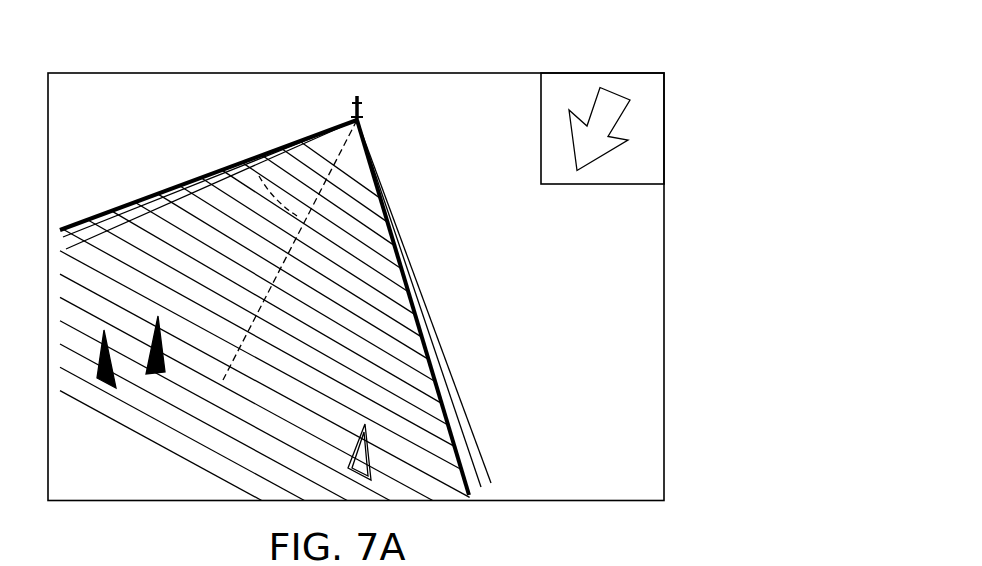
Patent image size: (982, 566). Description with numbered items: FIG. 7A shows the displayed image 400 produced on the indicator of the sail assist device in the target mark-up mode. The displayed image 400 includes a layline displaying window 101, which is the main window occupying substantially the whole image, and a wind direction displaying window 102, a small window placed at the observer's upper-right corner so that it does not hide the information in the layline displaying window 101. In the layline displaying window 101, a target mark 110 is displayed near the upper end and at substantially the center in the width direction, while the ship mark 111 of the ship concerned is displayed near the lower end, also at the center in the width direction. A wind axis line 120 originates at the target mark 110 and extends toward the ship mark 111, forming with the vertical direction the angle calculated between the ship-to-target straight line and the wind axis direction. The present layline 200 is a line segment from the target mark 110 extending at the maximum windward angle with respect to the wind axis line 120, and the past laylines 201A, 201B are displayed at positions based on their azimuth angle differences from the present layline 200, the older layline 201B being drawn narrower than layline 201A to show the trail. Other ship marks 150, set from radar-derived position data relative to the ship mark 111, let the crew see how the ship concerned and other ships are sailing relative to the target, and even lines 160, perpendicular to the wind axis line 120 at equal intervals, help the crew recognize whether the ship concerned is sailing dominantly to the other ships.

The layline displaying window 101 is at (60, 65).
The wind direction displaying window 102 is at (652, 66).
The displayed image 400 is at (626, 33).
The target mark 110 is at (373, 110).
The wind axis line 120 is at (289, 293).
The other ship mark 150 is at (172, 340).
The even lines 160 is at (139, 446).
The ship mark 111 is at (339, 480).
The present layline 200 is at (131, 192).
The past layline 201A is at (93, 245).
The past layline 201B is at (80, 263).